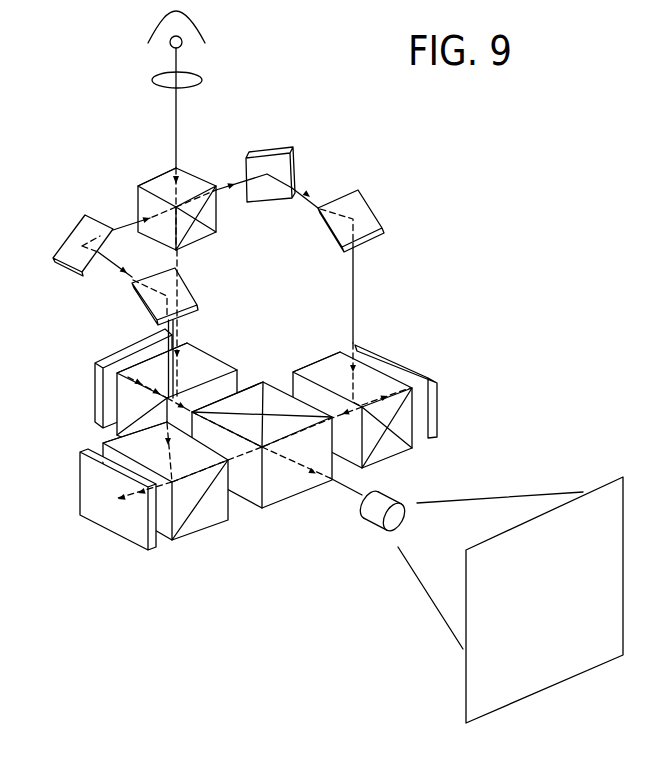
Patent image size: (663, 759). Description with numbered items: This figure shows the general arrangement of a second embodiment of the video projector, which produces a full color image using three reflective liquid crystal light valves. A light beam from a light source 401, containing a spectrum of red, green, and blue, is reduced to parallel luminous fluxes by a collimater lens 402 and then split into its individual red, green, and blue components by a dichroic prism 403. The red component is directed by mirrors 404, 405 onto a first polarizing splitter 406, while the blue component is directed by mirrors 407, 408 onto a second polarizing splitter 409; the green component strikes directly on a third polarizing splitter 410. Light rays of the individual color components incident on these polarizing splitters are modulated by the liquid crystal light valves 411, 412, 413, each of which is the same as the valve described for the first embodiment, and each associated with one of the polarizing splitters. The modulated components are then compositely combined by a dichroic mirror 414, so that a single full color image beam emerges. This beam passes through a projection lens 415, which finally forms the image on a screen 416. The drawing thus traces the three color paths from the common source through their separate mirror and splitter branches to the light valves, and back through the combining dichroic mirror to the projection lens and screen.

The light source 401 is at (205, 43).
The collimater lens 402 is at (203, 80).
The dichroic prism 403 is at (160, 178).
The mirror 404 is at (82, 222).
The mirror 405 is at (132, 302).
The first polarizing splitter 406 is at (198, 534).
The mirror 407 is at (280, 151).
The mirror 408 is at (372, 208).
The second polarizing splitter 409 is at (398, 457).
The third polarizing splitter 410 is at (212, 352).
The liquid crystal light valve 411 is at (110, 533).
The liquid crystal light valve 412 is at (415, 366).
The liquid crystal light valve 413 is at (93, 394).
The dichroic mirror 414 is at (280, 500).
The projection lens 415 is at (377, 528).
The screen 416 is at (528, 696).